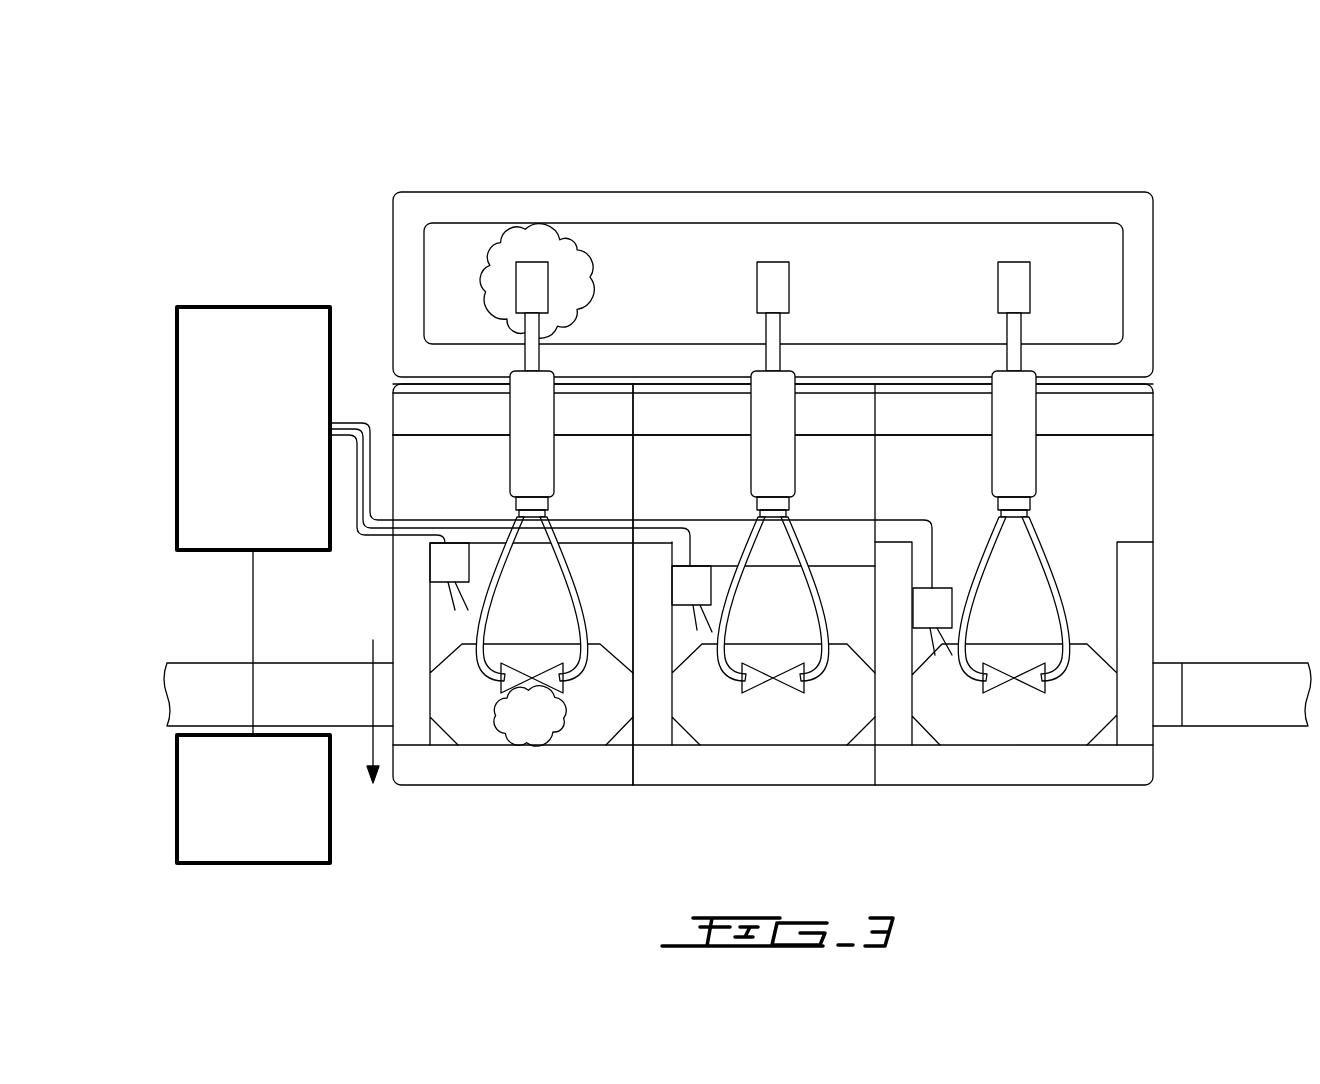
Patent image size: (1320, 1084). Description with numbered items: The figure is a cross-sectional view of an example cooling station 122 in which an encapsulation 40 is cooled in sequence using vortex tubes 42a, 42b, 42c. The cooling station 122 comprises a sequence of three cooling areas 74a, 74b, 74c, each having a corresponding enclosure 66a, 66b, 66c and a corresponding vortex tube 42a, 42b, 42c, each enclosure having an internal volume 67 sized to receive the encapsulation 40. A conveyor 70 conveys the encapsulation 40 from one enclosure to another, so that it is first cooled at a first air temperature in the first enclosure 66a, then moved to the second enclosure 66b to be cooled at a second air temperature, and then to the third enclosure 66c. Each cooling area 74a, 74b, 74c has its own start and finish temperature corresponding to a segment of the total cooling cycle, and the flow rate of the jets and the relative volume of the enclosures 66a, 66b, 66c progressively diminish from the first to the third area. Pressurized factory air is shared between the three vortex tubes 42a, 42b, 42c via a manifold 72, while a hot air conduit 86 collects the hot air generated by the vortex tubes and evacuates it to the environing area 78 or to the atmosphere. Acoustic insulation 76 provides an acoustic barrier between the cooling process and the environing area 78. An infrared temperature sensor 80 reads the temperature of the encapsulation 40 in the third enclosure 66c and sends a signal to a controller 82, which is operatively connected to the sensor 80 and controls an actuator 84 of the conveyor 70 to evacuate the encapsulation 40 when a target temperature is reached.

The cooling station 122 is at (1000, 118).
The hot air conduit 86 is at (1105, 191).
The first cooling area 74a is at (427, 455).
The second cooling area 74b is at (668, 455).
The third cooling area 74c is at (908, 455).
The first vortex tube 42a is at (537, 403).
The second vortex tube 42b is at (768, 403).
The third vortex tube 42c is at (1013, 392).
The internal volume 67 is at (610, 587).
The manifold 72 is at (1137, 413).
The acoustic insulation 76 is at (1137, 497).
The environing area 78 is at (1300, 407).
The first enclosure 66a is at (598, 770).
The second enclosure 66b is at (837, 770).
The third enclosure 66c is at (1092, 770).
The encapsulation 40 is at (728, 733).
The infrared temperature sensor 80 is at (930, 612).
The controller 82 is at (202, 306).
The actuator 84 is at (177, 800).
The conveyor 70 is at (1250, 722).